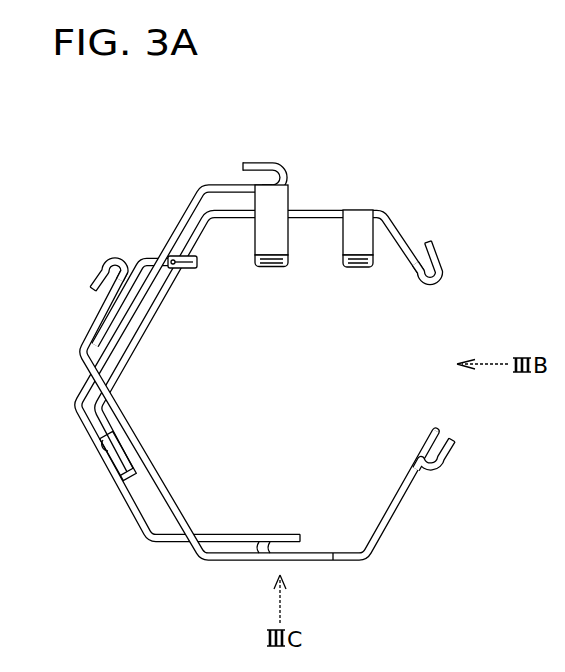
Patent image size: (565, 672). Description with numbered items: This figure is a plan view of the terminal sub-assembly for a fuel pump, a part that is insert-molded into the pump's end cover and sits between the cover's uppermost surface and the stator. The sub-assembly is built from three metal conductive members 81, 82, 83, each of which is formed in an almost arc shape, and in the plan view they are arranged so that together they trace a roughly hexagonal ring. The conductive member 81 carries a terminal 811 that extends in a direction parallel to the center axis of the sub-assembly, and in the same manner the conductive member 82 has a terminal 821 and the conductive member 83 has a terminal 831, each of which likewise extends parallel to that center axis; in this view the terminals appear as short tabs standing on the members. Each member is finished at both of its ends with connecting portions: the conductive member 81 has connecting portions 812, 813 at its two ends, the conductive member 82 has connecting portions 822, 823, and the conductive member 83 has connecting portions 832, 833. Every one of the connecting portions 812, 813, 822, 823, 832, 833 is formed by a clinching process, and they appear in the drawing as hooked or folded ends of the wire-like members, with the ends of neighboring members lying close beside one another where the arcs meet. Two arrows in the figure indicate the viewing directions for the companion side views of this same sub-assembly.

The conductive member 81 is at (328, 208).
The terminal 811 is at (357, 270).
The connecting portion 812 is at (440, 250).
The connecting portion 813 is at (101, 445).
The conductive member 82 is at (204, 184).
The terminal 821 is at (270, 270).
The connecting portion 822 is at (264, 162).
The connecting portion 823 is at (257, 548).
The conductive member 83 is at (168, 476).
The terminal 831 is at (186, 270).
The connecting portion 832 is at (97, 272).
The connecting portion 833 is at (453, 452).